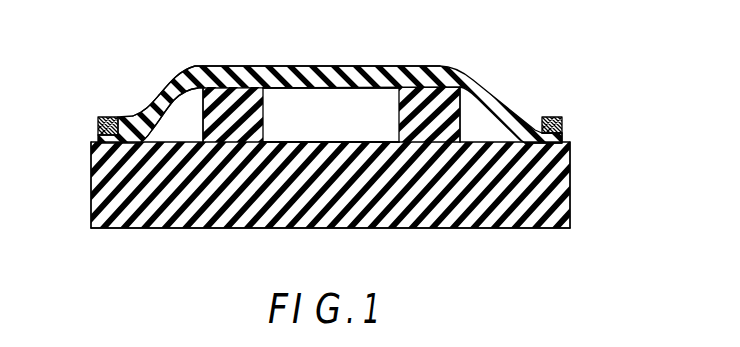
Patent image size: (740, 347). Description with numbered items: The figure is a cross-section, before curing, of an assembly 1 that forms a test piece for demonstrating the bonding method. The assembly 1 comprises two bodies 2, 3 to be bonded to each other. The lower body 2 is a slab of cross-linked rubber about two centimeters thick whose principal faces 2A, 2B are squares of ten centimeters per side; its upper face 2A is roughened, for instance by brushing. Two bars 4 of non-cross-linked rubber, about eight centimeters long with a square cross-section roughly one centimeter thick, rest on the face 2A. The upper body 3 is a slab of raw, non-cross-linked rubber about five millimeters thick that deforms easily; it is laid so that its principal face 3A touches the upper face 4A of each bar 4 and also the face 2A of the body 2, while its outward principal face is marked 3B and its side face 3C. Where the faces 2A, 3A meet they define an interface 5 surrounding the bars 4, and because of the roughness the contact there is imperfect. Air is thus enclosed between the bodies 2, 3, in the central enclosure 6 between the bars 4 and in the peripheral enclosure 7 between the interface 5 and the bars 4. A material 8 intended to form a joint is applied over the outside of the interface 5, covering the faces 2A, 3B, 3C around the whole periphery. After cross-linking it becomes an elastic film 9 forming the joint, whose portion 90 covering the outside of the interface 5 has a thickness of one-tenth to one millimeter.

The assembly 1 is at (520, 93).
The body 2 is at (571, 215).
The principal face of body 2 2A is at (312, 140).
The principal face of body 2 2B is at (245, 229).
The body 3 is at (480, 76).
The principal face of body 3 3A is at (368, 90).
The principal face of body 3 3B is at (161, 96).
The side face of body 3 3C is at (134, 122).
The bars 4 is at (262, 106).
The upper face of bar 4A is at (221, 82).
The interface 5 is at (105, 150).
The enclosure 6 is at (333, 140).
The enclosure 7 is at (180, 128).
The material 8 is at (98, 127).
The elastic film 9 is at (563, 120).
The portion of joint 90 is at (563, 138).